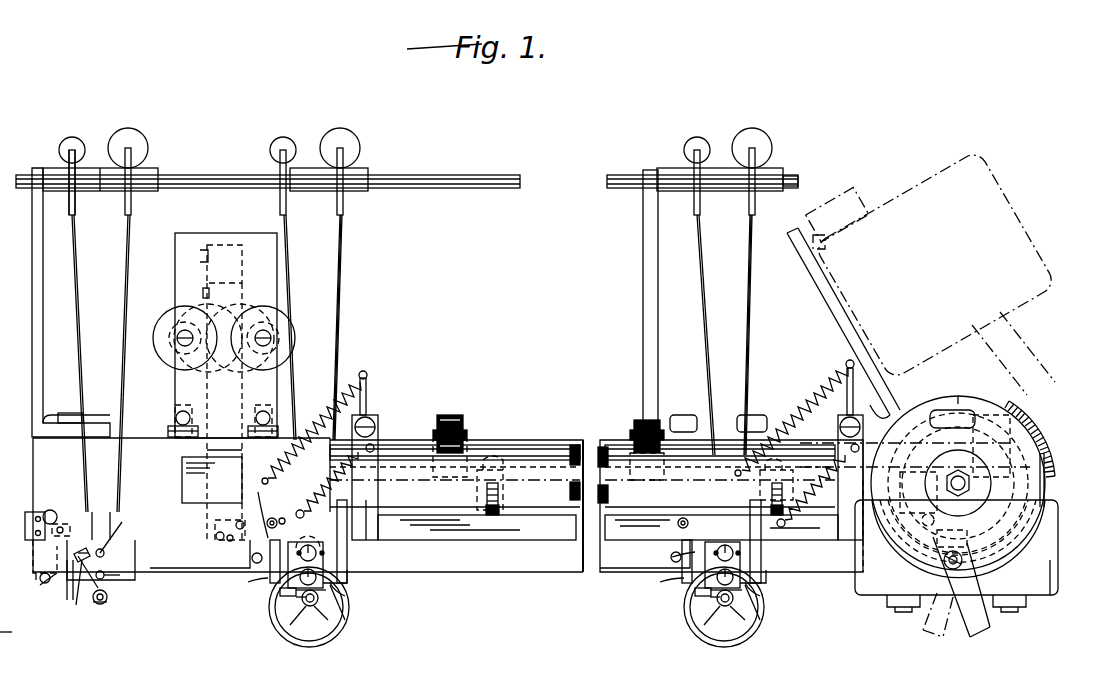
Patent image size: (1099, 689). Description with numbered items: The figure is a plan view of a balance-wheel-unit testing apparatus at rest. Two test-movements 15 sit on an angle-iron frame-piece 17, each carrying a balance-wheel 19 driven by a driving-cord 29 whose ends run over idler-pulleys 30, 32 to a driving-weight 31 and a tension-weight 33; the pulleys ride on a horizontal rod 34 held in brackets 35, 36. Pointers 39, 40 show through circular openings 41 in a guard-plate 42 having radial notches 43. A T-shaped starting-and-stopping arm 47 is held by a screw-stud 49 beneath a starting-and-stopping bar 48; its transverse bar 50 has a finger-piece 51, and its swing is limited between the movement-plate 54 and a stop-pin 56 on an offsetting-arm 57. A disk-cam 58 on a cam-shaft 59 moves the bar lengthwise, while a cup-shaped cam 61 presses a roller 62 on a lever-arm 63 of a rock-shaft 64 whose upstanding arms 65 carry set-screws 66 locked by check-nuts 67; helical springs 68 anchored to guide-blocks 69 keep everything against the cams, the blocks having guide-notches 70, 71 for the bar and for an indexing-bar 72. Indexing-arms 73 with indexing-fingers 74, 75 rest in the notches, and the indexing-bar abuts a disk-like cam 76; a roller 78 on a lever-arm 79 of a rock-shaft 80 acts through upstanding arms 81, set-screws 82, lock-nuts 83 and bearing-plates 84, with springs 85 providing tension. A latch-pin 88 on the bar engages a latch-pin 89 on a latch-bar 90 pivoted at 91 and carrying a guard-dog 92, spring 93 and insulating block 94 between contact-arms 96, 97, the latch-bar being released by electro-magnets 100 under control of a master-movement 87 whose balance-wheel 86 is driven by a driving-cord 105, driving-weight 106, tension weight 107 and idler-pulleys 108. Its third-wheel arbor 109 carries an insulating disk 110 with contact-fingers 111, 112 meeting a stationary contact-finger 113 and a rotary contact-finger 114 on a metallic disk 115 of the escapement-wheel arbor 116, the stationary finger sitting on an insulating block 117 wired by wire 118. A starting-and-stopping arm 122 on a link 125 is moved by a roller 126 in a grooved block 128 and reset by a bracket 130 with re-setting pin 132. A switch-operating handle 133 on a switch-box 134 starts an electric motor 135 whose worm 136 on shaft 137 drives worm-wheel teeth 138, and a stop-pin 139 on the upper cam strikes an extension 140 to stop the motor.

The test-movement 15 is at (345, 588).
The angle-iron frame-piece 17 is at (35, 470).
The balance-wheel 19 is at (302, 620).
The driving-cord 29 is at (340, 250).
The idler-pulley 30 is at (344, 210).
The driving-weight 31 is at (348, 132).
The idler-pulley 32 is at (288, 205).
The tension-weight 33 is at (283, 137).
The horizontal rod 34 is at (490, 176).
The bracket 35 is at (33, 253).
The bracket 36 is at (643, 262).
The pointer 39 is at (314, 547).
The pointer 40 is at (318, 563).
The circular opening 41 is at (297, 551).
The guard-plate 42 is at (290, 580).
The radial notch 43 is at (325, 553).
The starting-and-stopping arm 47 is at (672, 557).
The starting-and-stopping bar 48 is at (487, 540).
The screw-stud 49 is at (276, 518).
The transverse bar 50 is at (270, 575).
The finger-piece 51 is at (250, 580).
The movement-plate 54 is at (335, 612).
The stop-pin 56 is at (252, 558).
The offsetting-arm 57 is at (250, 568).
The disk-cam 58 is at (897, 550).
The cam-shaft 59 is at (970, 488).
The cup-shaped cam 61 is at (1010, 545).
The roller 62 is at (978, 550).
The lever-arm 63 is at (967, 535).
The rock-shaft 64 is at (578, 500).
The upstanding arm 65 is at (503, 480).
The set-screw 66 is at (499, 492).
The check-nut 67 is at (498, 458).
The helical spring 68 is at (330, 483).
The guide-block 69 is at (375, 412).
The guide-notch 70 is at (368, 512).
The guide-notch 71 is at (374, 446).
The indexing-bar 72 is at (181, 483).
The indexing-arm 73 is at (350, 575).
The indexing-finger 74 is at (348, 583).
The indexing-finger 75 is at (347, 560).
The disk-like cam 76 is at (1040, 528).
The roller 78 is at (925, 403).
The lever-arm 79 is at (948, 430).
The rock-shaft 80 is at (602, 445).
The upstanding arm 81 is at (467, 440).
The set-screw 82 is at (452, 415).
The lock-nut 83 is at (440, 425).
The bearing-plate 84 is at (470, 452).
The spring 85 is at (318, 412).
The balance-wheel 86 is at (105, 602).
The master-movement 87 is at (134, 580).
The latch-pin 88 is at (240, 522).
The latch-pin 89 is at (230, 522).
The latch-bar 90 is at (206, 450).
The pivot 91 is at (176, 425).
The guard-dog 92 is at (218, 540).
The spring 93 is at (232, 540).
The insulating block 94 is at (228, 245).
The spring contact-arm 96 is at (200, 258).
The spring contact-arm 97 is at (203, 294).
The electro-magnet 100 is at (158, 340).
The driving-cord 105 is at (124, 268).
The driving-weight 106 is at (145, 138).
The tension weight 107 is at (71, 137).
The idler-pulley 108 is at (76, 212).
The third-wheel arbor 109 is at (104, 512).
The insulating disk 110 is at (122, 523).
The upper contact-finger 111 is at (101, 525).
The lower contact-finger 112 is at (104, 553).
The stationary contact-finger 113 is at (80, 562).
The rotary contact-finger 114 is at (80, 606).
The metallic disk 115 is at (104, 573).
The escapement-wheel arbor 116 is at (105, 576).
The insulating block 117 is at (66, 568).
The wire 118 is at (67, 580).
The starting-and-stopping arm 122 is at (60, 576).
The link 125 is at (52, 510).
The roller 126 is at (62, 524).
The block 128 is at (25, 527).
The bracket 130 is at (35, 548).
The re-setting pin 132 is at (38, 580).
The switch-operating handle 133 is at (985, 630).
The switch-box 134 is at (1052, 590).
The electric motor 135 is at (933, 160).
The worm 136 is at (1042, 445).
The motor shaft 137 is at (1020, 392).
The worm-wheel teeth 138 is at (1046, 478).
The stop-pin 139 is at (950, 520).
The extension 140 is at (945, 562).